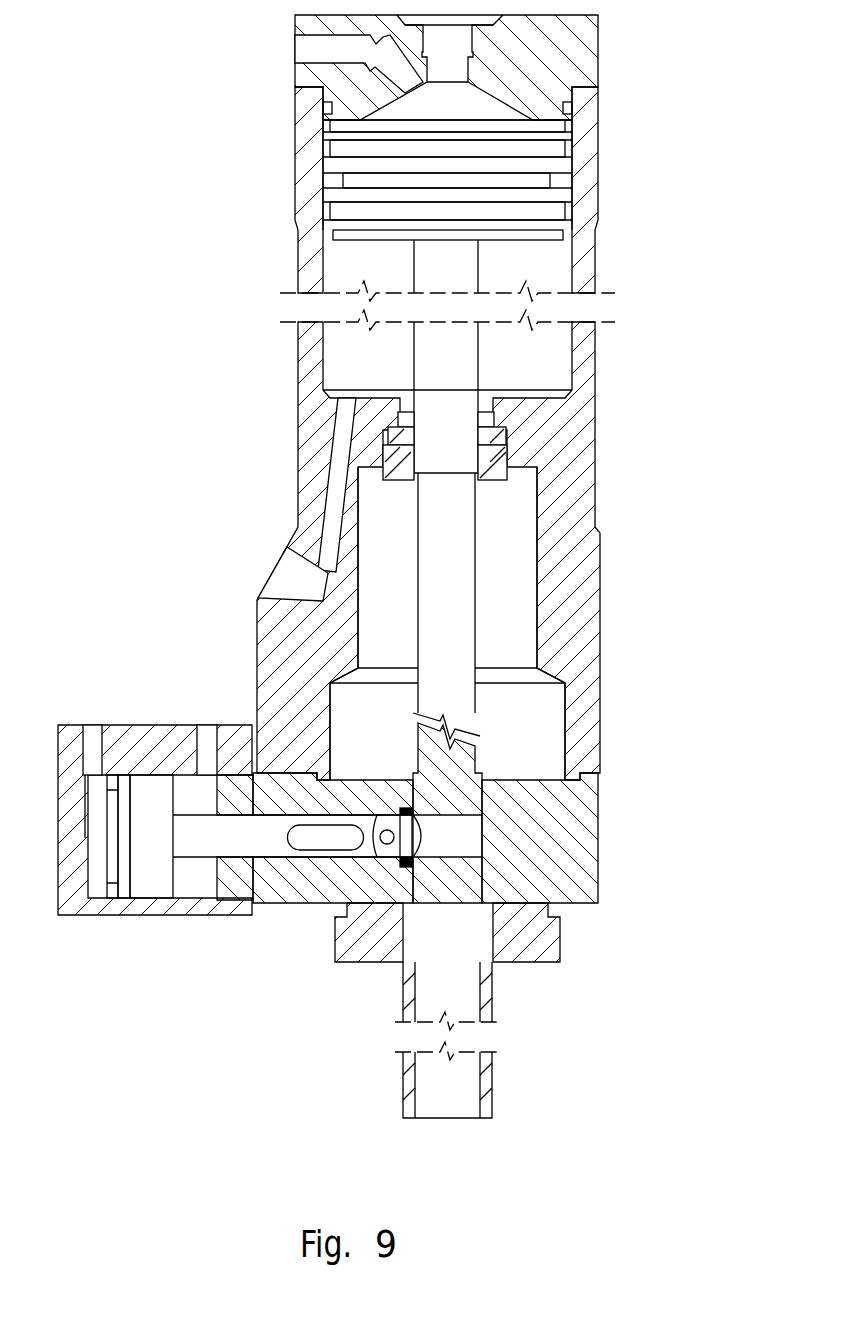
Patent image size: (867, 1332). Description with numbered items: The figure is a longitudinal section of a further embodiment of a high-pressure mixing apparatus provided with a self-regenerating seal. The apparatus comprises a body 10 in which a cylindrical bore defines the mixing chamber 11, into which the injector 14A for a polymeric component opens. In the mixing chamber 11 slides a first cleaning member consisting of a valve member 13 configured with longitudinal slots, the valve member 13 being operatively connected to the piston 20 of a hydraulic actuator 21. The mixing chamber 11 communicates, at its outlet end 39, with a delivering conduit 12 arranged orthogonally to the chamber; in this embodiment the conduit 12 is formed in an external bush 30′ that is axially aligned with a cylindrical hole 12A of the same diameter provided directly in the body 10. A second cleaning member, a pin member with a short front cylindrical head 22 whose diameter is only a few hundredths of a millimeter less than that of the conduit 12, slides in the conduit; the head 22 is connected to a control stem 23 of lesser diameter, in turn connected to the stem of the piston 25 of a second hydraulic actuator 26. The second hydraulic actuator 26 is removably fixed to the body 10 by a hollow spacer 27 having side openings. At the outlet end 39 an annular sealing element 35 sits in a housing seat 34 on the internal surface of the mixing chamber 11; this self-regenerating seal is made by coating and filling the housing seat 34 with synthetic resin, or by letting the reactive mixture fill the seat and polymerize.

The second hydraulic actuator 26 is at (588, 177).
The piston 25 is at (552, 211).
The control stem 23 is at (450, 506).
The hollow spacer 27 is at (273, 628).
The front cylindrical head 22 is at (446, 782).
The body 10 is at (562, 905).
The housing seat 34 is at (403, 829).
The cylindrical hole 12A is at (452, 850).
The outlet end 39 is at (425, 845).
The annular sealing element 35 is at (411, 866).
The hydraulic actuator 21 is at (135, 908).
The piston 20 is at (152, 800).
The valve member 13 is at (268, 838).
The injector 14A is at (293, 857).
The mixing chamber 11 is at (386, 843).
The delivering conduit 12 is at (462, 992).
The external bush 30′ is at (484, 1093).